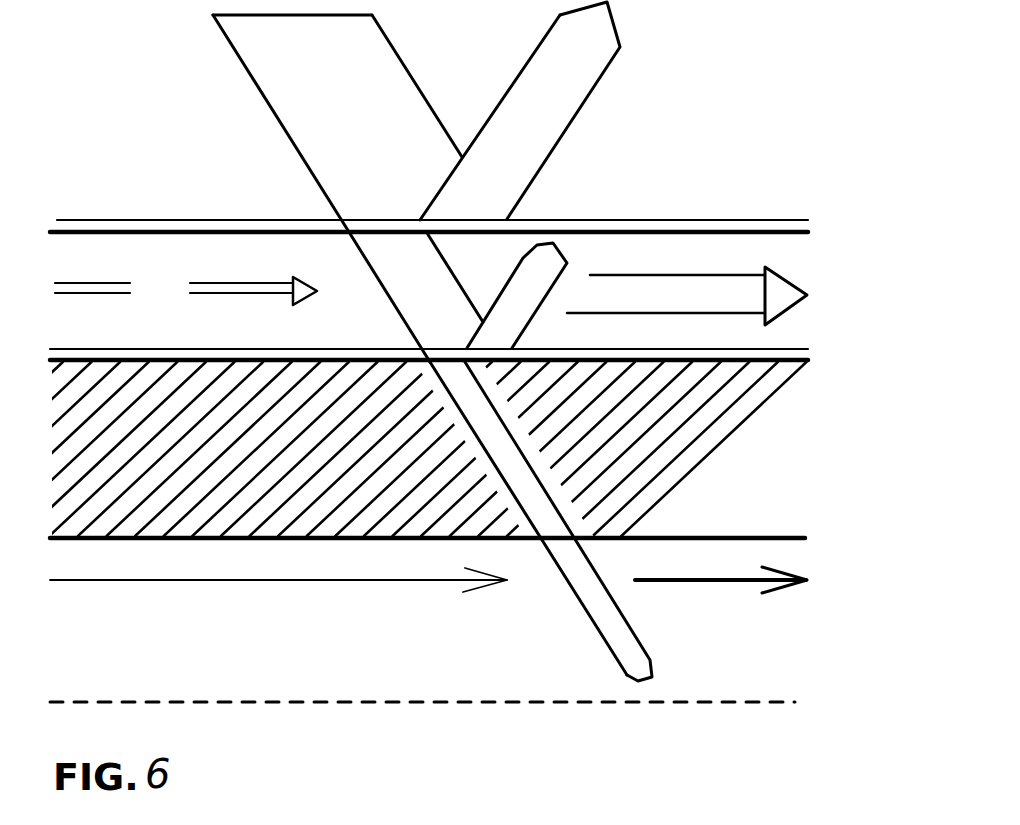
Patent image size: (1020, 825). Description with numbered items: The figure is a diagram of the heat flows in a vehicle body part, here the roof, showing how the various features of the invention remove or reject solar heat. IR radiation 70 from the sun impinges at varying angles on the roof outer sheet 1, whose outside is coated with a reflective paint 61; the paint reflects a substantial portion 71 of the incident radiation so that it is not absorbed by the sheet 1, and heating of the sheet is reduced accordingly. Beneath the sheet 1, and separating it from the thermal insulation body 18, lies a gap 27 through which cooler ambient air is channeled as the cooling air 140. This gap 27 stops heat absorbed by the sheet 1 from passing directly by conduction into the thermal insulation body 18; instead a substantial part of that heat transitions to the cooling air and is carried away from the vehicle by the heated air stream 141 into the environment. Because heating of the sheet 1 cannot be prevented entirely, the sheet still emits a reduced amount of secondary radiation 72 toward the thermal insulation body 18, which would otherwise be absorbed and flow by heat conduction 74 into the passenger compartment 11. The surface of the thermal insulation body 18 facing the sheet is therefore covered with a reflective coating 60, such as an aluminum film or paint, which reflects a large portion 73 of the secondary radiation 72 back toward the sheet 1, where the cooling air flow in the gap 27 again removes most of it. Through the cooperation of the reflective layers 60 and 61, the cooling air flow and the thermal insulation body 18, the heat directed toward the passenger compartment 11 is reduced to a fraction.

The roof outer sheet 1 is at (808, 232).
The passenger compartment 11 is at (775, 610).
The thermal insulation body 18 is at (772, 472).
The gap 27 is at (783, 257).
The reflective coating 60 is at (808, 350).
The reflective paint 61 is at (808, 220).
The IR radiation 70 is at (337, 123).
The reflected portion of IR radiation 71 is at (520, 111).
The secondary radiation 72 is at (416, 297).
The reflected portion of secondary radiation 73 is at (517, 295).
The heat conduction 74 is at (541, 521).
The cooling air 140 is at (186, 292).
The heated air stream 141 is at (687, 296).